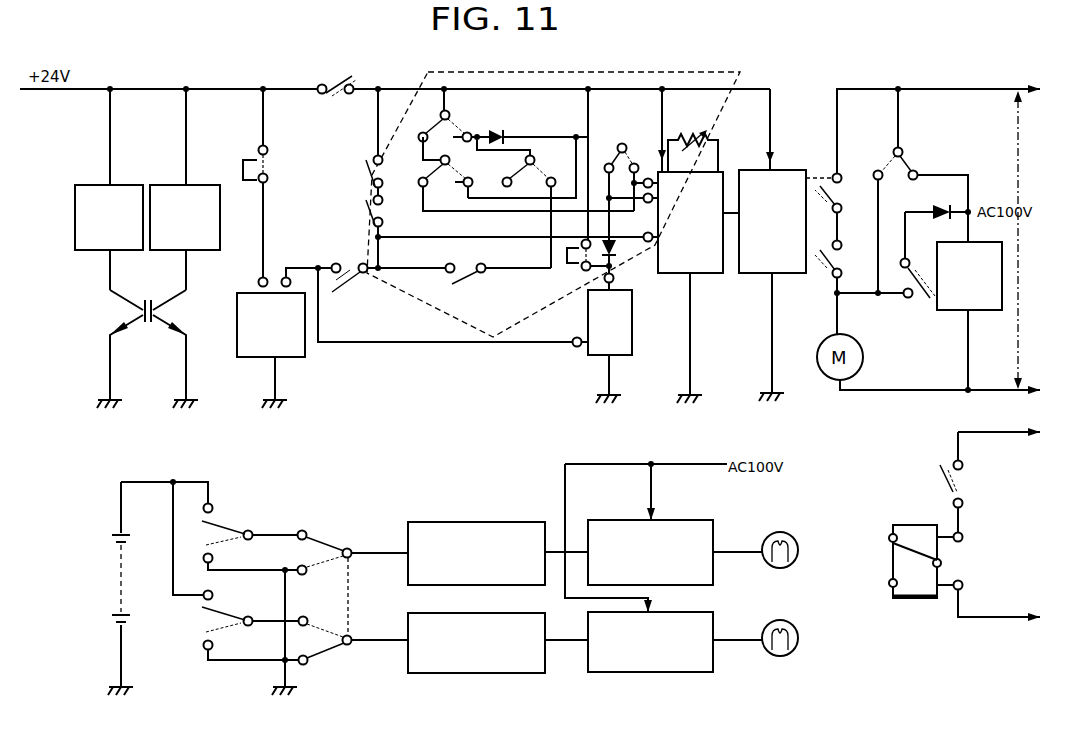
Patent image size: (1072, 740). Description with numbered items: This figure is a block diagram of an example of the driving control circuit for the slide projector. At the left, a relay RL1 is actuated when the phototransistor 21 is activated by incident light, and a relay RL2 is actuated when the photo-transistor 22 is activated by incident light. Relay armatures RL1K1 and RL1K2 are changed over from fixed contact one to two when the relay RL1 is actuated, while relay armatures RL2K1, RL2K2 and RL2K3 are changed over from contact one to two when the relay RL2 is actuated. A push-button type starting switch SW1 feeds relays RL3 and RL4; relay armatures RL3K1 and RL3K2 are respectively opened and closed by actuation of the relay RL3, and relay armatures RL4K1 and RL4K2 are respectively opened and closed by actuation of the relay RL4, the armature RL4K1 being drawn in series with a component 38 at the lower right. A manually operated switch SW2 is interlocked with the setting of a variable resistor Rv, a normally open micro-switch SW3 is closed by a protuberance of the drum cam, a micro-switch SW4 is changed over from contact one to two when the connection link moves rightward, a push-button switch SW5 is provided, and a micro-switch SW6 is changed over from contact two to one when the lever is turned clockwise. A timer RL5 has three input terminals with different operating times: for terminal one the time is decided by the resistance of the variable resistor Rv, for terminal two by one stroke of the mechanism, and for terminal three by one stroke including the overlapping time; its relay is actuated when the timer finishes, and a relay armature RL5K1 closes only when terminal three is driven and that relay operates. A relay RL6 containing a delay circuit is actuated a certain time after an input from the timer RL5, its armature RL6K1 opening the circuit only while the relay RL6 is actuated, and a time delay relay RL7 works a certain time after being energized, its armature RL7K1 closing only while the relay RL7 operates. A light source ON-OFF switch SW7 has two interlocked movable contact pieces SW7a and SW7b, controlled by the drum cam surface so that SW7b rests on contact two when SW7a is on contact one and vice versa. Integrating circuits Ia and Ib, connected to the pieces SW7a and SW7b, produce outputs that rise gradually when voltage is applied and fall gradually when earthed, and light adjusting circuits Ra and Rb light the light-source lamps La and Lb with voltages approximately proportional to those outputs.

The phototransistor 21 is at (100, 318).
The photo-transistor 22 is at (168, 310).
The coil 38 is at (893, 559).
The relay RL1 is at (97, 184).
The relay RL2 is at (178, 184).
The relay RL3 is at (283, 357).
The relay RL4 is at (633, 327).
The timer RL5 is at (684, 287).
The relay RL6 is at (752, 276).
The time delay relay RL7 is at (960, 312).
The push-button type starting switch SW1 is at (268, 166).
The manually operated switch SW2 is at (372, 174).
The normally open type micro-switch SW3 is at (468, 282).
The micro-switch SW4 is at (625, 143).
The push-button switch SW5 is at (573, 272).
The micro-switch SW6 is at (904, 149).
The light source ON-OFF switch SW7 is at (333, 620).
The movable contact piece SW7a is at (340, 546).
The movable contact piece SW7b is at (338, 652).
The variable resistor Rv is at (688, 130).
The light adjusting circuit Ra is at (666, 519).
The light adjusting circuit Rb is at (679, 612).
The light-source lamp La is at (779, 532).
The light-source lamp Lb is at (784, 620).
The integrating circuit Ia is at (406, 530).
The integrating circuit Ib is at (405, 632).
The relay armature RL1K1 is at (456, 115).
The relay armature RL1K2 is at (226, 523).
The relay armature RL2K1 is at (438, 188).
The relay armature RL2K2 is at (540, 188).
The relay armature RL2K3 is at (229, 612).
The relay armature RL3K1 is at (327, 95).
The relay armature RL3K2 is at (818, 283).
The relay armature RL4K1 is at (946, 483).
The relay armature RL4K2 is at (371, 218).
The relay armature RL5K1 is at (353, 286).
The relay armature RL6K1 is at (817, 167).
The relay armature RL7K1 is at (916, 300).